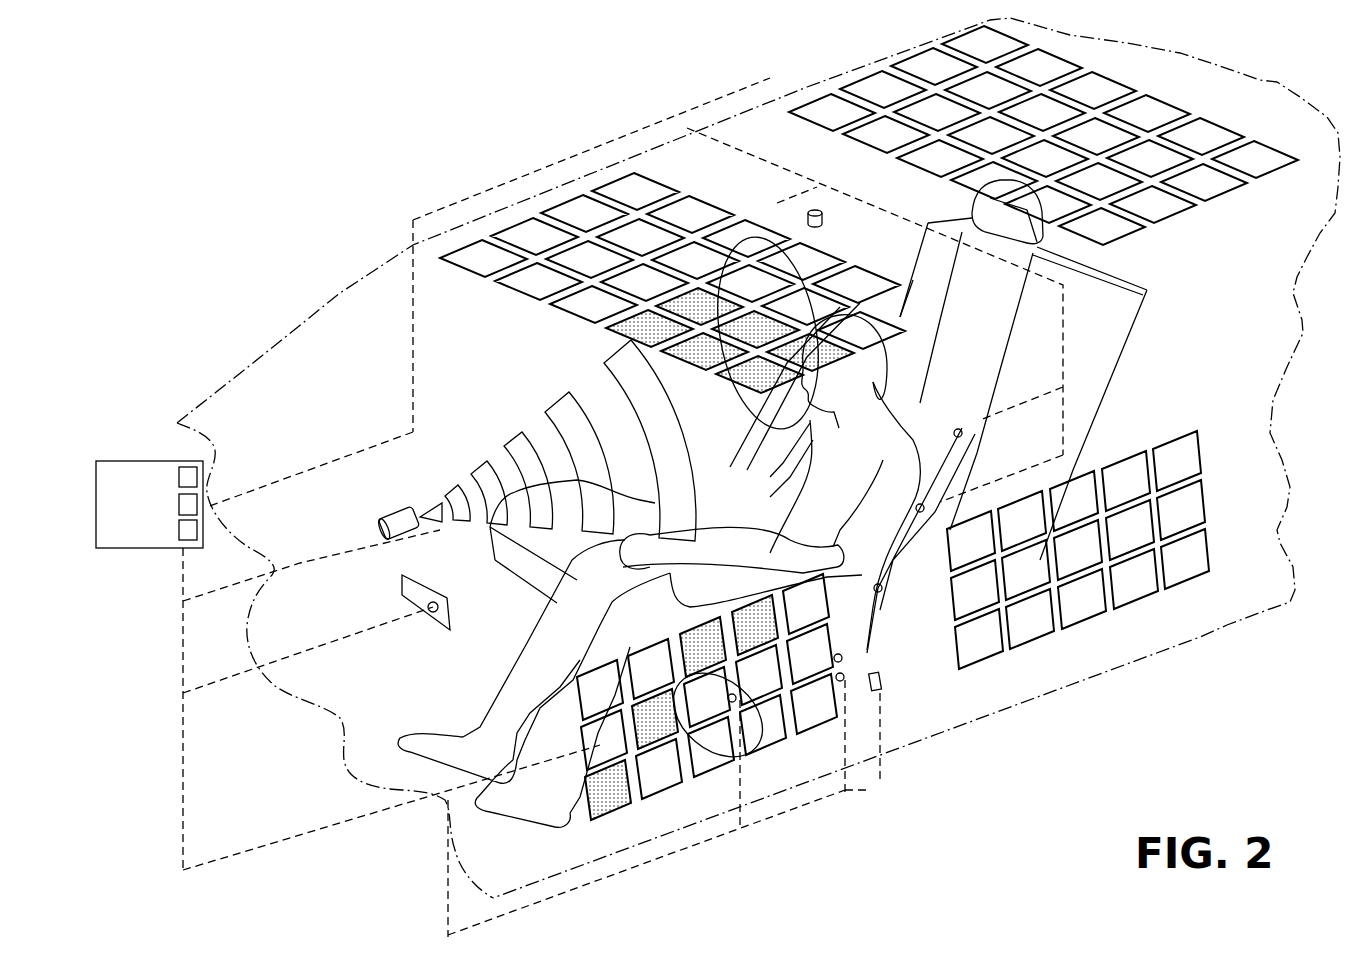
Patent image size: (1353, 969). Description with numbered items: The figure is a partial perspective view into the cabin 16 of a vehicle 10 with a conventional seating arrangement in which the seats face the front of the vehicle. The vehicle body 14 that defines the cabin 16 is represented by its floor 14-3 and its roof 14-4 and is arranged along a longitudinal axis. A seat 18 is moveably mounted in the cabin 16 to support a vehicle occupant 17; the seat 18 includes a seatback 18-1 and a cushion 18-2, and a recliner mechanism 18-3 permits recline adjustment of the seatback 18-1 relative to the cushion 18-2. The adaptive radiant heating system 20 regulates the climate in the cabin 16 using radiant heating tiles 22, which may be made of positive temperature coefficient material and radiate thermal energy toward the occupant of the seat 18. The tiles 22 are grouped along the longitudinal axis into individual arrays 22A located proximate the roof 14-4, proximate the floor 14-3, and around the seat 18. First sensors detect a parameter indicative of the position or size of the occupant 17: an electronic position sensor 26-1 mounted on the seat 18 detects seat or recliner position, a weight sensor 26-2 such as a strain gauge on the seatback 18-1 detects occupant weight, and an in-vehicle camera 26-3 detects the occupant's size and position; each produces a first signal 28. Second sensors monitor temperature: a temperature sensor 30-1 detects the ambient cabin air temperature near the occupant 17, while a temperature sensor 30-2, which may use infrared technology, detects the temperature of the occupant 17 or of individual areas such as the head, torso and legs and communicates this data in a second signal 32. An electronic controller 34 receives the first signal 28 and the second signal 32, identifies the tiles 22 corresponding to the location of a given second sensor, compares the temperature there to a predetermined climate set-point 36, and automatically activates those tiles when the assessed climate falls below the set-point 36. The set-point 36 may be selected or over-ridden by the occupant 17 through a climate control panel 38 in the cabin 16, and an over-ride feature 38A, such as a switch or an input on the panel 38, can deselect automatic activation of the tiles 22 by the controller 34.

The vehicle 10 is at (490, 100).
The vehicle body 14 is at (343, 293).
The floor 14-3 is at (550, 873).
The roof 14-4 is at (687, 157).
The cabin 16 is at (657, 499).
The vehicle occupant 17 is at (890, 633).
The seat 18 is at (747, 427).
The seatback 18-1 is at (922, 430).
The cushion 18-2 is at (585, 640).
The recliner mechanism 18-3 is at (882, 685).
The adaptive radiant heating system 20 is at (253, 365).
The radiant heating tiles 22 is at (573, 303).
The array 22A is at (507, 293).
The electronic position sensor 26-1 is at (842, 658).
The weight sensor 26-2 is at (957, 430).
The in-vehicle camera 26-3 is at (400, 513).
The first signal 28 is at (190, 463).
The temperature sensor 30-1 is at (823, 222).
The temperature sensor 30-2 is at (970, 437).
The second signal 32 is at (198, 497).
The electronic controller 34 is at (149, 504).
The predetermined climate set-point 36 is at (198, 527).
The climate control panel 38 is at (440, 630).
The over-ride feature 38A is at (450, 600).